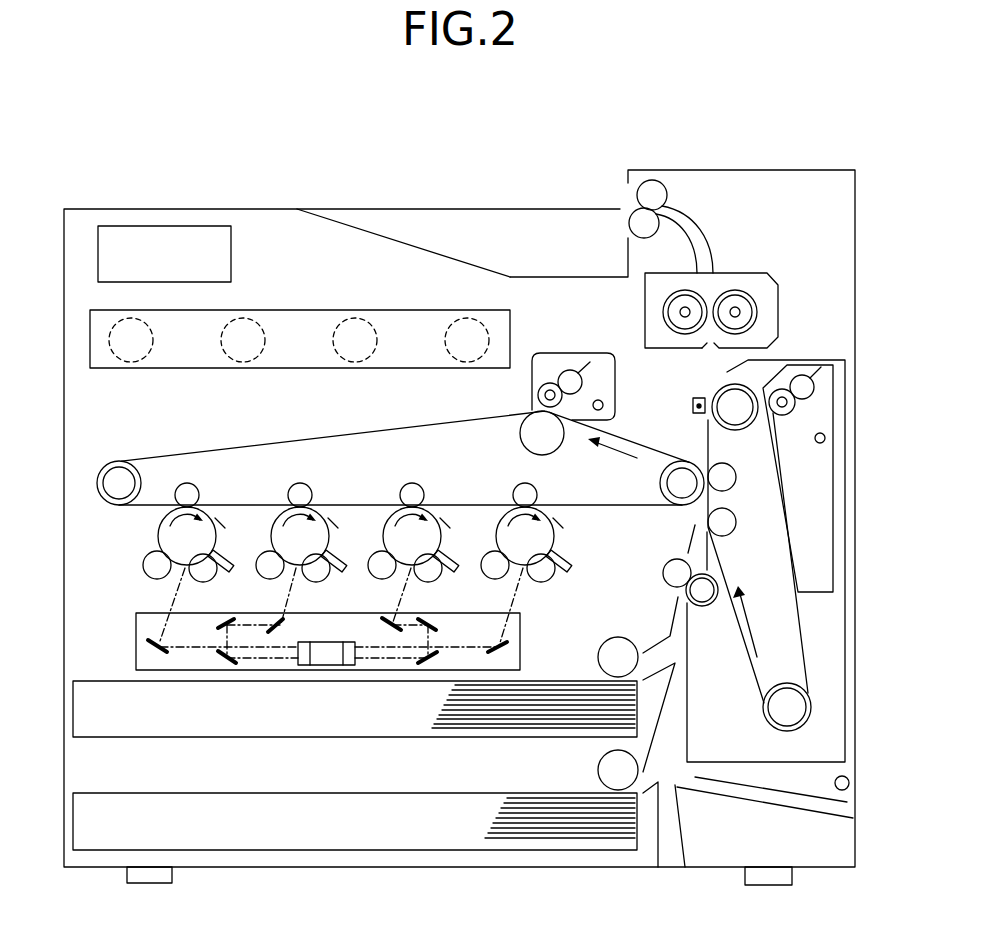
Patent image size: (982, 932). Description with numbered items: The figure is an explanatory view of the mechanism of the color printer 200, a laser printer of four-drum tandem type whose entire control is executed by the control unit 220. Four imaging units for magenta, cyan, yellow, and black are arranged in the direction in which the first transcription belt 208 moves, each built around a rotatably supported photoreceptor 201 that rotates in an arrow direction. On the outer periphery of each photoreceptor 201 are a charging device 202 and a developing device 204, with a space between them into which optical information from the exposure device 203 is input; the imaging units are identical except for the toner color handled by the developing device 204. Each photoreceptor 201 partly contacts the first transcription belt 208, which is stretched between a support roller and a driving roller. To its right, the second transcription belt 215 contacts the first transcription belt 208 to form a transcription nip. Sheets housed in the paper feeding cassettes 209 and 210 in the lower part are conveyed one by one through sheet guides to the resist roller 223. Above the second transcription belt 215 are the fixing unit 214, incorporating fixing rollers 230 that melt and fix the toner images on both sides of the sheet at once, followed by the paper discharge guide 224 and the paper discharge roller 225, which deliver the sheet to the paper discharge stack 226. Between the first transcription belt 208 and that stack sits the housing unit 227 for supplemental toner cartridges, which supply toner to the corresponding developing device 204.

The color printer 200 is at (424, 182).
The photoreceptor 201 is at (158, 538).
The charging device 202 is at (208, 580).
The exposure device 203 is at (333, 613).
The developing device 204 is at (152, 576).
The first transcription belt 208 is at (352, 505).
The paper feeding cassette 209 is at (318, 729).
The paper feeding cassette 210 is at (318, 843).
The fixing unit 214 is at (733, 273).
The second transcription belt 215 is at (742, 655).
The control unit 220 is at (232, 247).
The resist roller 223 is at (673, 563).
The paper discharge guide 224 is at (710, 200).
The paper discharge roller 225 is at (633, 213).
The paper discharge stack 226 is at (413, 246).
The housing unit 227 is at (313, 310).
The fixing rollers 230 is at (757, 312).